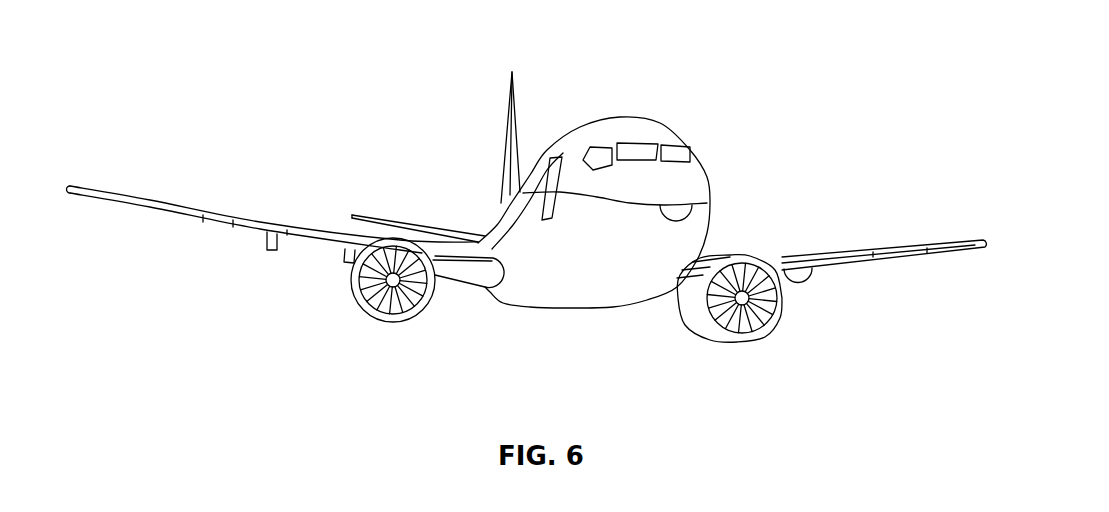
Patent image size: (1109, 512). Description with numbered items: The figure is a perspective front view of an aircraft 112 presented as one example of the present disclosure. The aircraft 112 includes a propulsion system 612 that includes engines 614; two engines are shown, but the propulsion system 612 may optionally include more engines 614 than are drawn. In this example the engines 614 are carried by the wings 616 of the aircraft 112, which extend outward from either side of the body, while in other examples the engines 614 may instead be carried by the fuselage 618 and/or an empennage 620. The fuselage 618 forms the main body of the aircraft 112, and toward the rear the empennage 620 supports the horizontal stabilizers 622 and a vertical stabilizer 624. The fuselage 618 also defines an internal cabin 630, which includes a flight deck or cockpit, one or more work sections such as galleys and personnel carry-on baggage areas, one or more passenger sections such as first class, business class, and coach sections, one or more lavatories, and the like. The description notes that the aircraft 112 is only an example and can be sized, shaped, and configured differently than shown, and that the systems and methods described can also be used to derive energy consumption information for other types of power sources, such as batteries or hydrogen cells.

The aircraft 112 is at (300, 77).
The propulsion system 612 is at (339, 307).
The engines 614 is at (388, 323).
The wings 616 is at (195, 209).
The fuselage 618 is at (709, 173).
The empennage 620 is at (500, 200).
The horizontal stabilizers 622 is at (385, 214).
The vertical stabilizer 624 is at (508, 109).
The internal cabin 630 is at (636, 146).